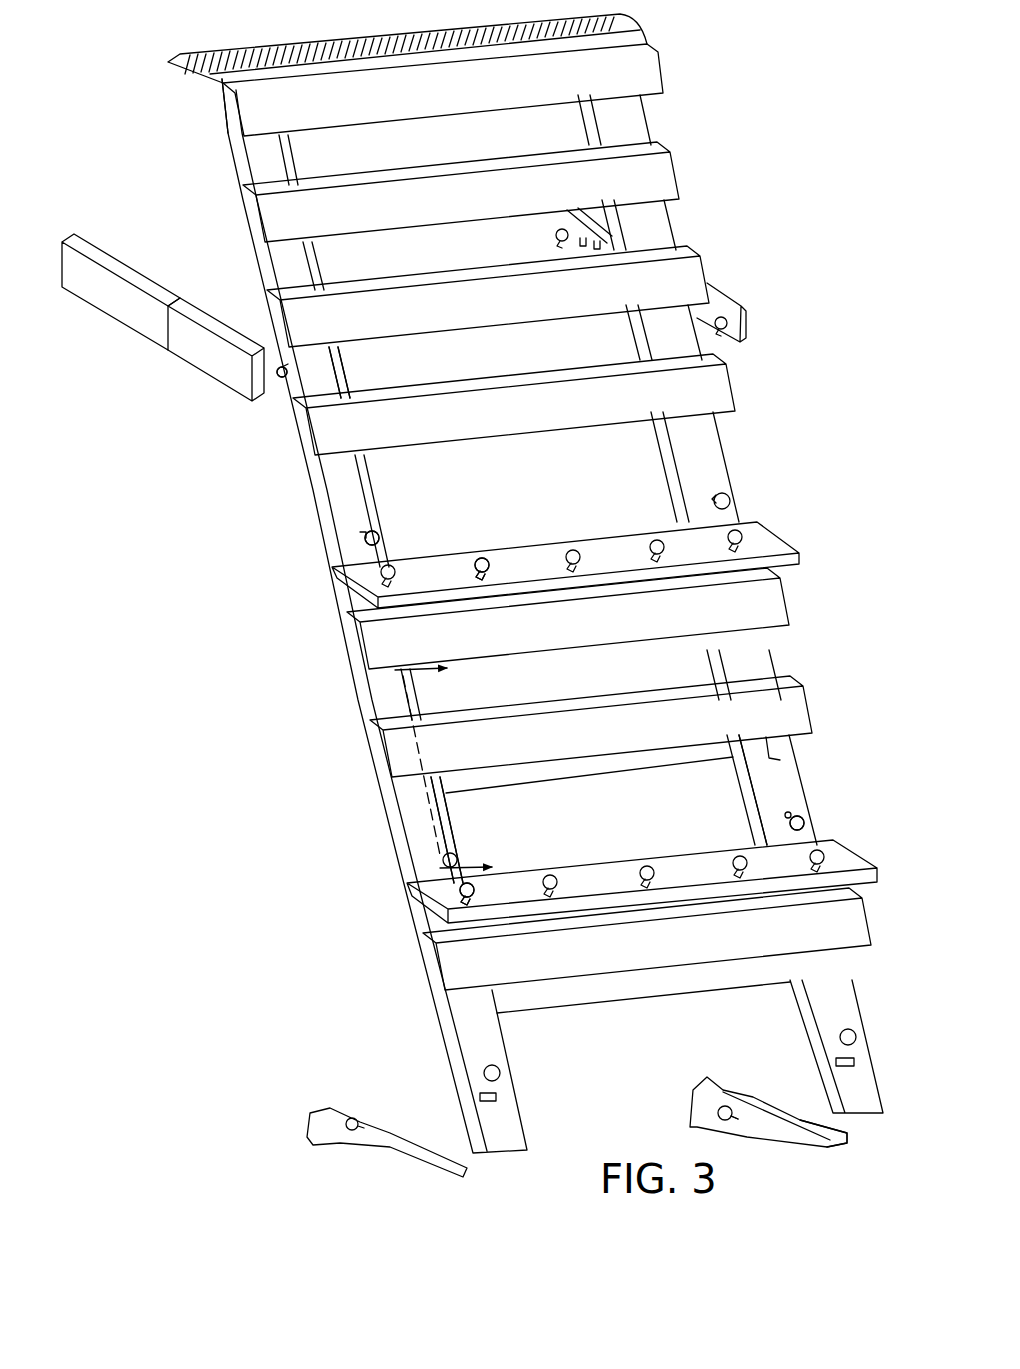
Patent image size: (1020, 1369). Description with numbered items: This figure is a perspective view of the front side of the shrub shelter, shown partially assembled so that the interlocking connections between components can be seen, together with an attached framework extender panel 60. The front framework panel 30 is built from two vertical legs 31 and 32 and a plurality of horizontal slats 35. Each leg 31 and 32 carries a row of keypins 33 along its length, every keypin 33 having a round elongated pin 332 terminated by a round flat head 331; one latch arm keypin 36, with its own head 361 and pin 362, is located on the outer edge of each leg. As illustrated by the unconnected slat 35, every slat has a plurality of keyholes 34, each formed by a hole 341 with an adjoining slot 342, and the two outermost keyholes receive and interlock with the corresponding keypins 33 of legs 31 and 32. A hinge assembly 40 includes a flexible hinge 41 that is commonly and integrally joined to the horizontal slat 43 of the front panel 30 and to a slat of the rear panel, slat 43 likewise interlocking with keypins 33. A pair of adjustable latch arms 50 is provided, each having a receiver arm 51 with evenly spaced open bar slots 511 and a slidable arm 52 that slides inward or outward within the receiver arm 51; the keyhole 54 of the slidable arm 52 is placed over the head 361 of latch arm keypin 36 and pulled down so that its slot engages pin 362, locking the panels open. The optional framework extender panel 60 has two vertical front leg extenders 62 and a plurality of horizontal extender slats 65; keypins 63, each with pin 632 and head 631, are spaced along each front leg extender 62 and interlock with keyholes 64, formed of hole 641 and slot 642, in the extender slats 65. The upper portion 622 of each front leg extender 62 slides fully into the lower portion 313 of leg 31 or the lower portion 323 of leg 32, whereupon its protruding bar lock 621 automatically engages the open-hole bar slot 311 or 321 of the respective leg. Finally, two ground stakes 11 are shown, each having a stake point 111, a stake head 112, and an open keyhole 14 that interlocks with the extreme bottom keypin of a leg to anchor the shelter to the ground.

The ground stake 11 is at (608, 1111).
The keyhole 14 is at (746, 1130).
The front framework panel 30 is at (489, 591).
The leg 31 is at (313, 500).
The leg 32 is at (738, 458).
The keypin 33 is at (706, 500).
The keyhole 34 is at (710, 533).
The horizontal slat 35 is at (330, 580).
The latch arm keypin 36 is at (282, 385).
The hinge assembly 40 is at (468, 71).
The flexible hinge 41 is at (337, 45).
The horizontal slat 43 is at (222, 107).
The adjustable latch arm 50 is at (433, 314).
The receiver arm 51 is at (80, 302).
The slidable arm 52 is at (213, 378).
The keyhole 54 is at (552, 234).
The framework extender panel 60 is at (603, 935).
The front leg extender 62 is at (647, 951).
The keypin 63 is at (785, 823).
The keyhole 64 is at (800, 853).
The horizontal extender slat 65 is at (405, 888).
The stake point 111 is at (848, 1137).
The stake head 112 is at (697, 1085).
The open-hole bar slot 311 is at (437, 779).
The lower portion 313 is at (452, 818).
The open-hole bar slot 321 is at (772, 741).
The lower portion 323 is at (763, 780).
The head 331 is at (366, 541).
The pin 332 is at (362, 533).
The hole 341 is at (483, 560).
The slot 342 is at (488, 572).
The head 361 is at (288, 372).
The pin 362 is at (347, 362).
The open bar slot 511 is at (580, 250).
The bar lock 621 is at (700, 764).
The upper portion 622 is at (500, 1097).
The head 631 is at (806, 823).
The pin 632 is at (790, 817).
The hole 641 is at (458, 891).
The slot 642 is at (452, 905).